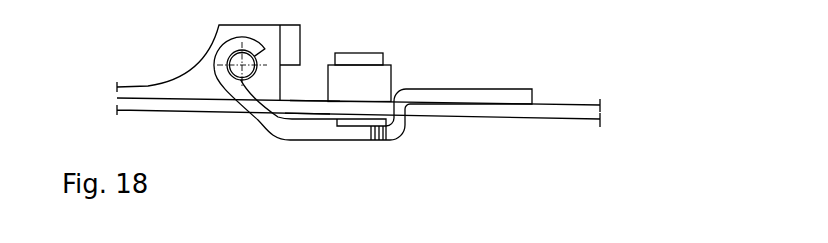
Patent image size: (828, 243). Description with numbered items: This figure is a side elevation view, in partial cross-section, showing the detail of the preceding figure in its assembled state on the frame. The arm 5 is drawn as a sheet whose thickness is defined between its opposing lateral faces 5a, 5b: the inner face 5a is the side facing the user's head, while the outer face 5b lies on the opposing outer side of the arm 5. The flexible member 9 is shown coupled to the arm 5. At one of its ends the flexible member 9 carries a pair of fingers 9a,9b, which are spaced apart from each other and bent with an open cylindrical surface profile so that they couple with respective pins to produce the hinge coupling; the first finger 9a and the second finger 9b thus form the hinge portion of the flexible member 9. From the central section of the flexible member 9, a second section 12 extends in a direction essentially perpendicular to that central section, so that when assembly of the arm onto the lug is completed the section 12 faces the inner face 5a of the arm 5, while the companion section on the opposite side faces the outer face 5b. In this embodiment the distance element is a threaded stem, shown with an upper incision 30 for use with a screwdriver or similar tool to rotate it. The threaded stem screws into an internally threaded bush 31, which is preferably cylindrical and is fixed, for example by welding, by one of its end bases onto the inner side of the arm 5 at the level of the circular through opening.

The arm 5 is at (551, 128).
The inner face of the arm 5a is at (312, 98).
The outer face of the arm 5b is at (299, 115).
The flexible member 9 is at (324, 150).
The pair of fingers 9a,9b is at (206, 63).
The finger 9a is at (206, 63).
The finger 9b is at (200, 90).
The second section of the flexible member 12 is at (462, 88).
The upper incision 30 is at (370, 53).
The internally threaded bush 31 is at (380, 80).